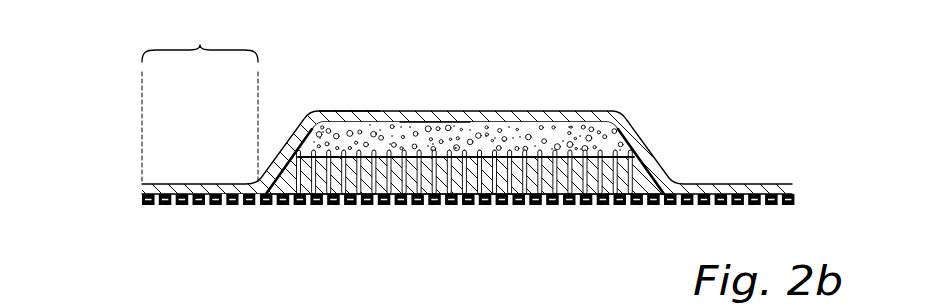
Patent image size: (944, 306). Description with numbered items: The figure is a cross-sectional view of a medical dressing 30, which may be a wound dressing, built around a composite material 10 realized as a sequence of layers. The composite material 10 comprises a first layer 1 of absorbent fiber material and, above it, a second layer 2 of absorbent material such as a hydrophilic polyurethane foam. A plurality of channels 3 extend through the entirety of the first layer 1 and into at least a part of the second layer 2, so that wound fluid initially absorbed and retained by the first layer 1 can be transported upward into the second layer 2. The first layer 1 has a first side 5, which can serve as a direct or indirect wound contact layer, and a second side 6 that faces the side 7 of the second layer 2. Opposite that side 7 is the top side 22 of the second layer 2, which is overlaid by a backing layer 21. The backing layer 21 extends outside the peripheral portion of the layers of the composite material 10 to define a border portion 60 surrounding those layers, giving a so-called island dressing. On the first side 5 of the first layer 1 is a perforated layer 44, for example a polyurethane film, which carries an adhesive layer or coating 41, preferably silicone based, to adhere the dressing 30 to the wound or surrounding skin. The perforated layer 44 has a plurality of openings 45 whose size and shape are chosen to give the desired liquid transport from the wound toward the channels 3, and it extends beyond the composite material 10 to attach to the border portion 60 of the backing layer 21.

The first layer 1 is at (653, 182).
The second layer 2 is at (613, 137).
The channels 3 is at (371, 186).
The first side 5 is at (508, 196).
The second side 6 is at (478, 152).
The side 7 is at (333, 162).
The composite material 10 is at (548, 133).
The backing layer 21 is at (367, 110).
The top side 22 is at (437, 116).
The medical dressing 30 is at (467, 142).
The adhesive layer or coating 41 is at (142, 203).
The perforated layer 44 is at (142, 197).
The openings 45 is at (257, 207).
The border portion 60 is at (200, 99).